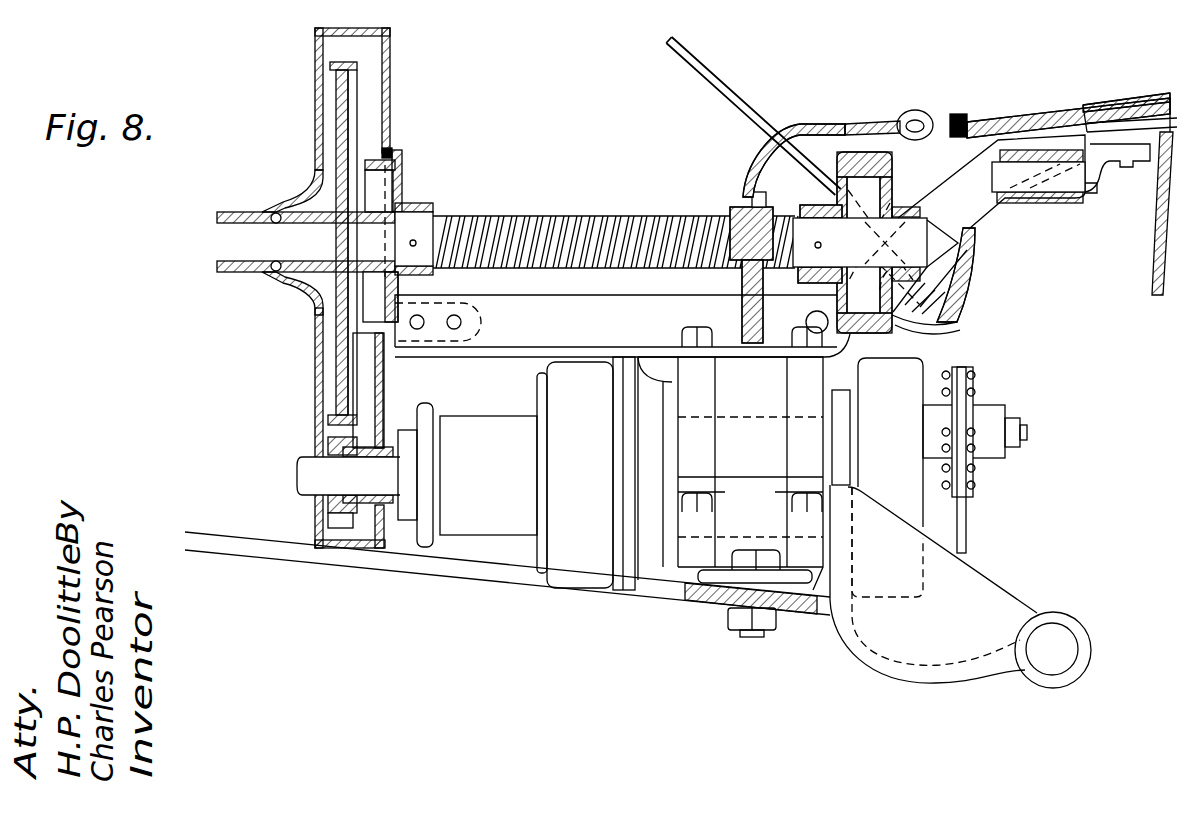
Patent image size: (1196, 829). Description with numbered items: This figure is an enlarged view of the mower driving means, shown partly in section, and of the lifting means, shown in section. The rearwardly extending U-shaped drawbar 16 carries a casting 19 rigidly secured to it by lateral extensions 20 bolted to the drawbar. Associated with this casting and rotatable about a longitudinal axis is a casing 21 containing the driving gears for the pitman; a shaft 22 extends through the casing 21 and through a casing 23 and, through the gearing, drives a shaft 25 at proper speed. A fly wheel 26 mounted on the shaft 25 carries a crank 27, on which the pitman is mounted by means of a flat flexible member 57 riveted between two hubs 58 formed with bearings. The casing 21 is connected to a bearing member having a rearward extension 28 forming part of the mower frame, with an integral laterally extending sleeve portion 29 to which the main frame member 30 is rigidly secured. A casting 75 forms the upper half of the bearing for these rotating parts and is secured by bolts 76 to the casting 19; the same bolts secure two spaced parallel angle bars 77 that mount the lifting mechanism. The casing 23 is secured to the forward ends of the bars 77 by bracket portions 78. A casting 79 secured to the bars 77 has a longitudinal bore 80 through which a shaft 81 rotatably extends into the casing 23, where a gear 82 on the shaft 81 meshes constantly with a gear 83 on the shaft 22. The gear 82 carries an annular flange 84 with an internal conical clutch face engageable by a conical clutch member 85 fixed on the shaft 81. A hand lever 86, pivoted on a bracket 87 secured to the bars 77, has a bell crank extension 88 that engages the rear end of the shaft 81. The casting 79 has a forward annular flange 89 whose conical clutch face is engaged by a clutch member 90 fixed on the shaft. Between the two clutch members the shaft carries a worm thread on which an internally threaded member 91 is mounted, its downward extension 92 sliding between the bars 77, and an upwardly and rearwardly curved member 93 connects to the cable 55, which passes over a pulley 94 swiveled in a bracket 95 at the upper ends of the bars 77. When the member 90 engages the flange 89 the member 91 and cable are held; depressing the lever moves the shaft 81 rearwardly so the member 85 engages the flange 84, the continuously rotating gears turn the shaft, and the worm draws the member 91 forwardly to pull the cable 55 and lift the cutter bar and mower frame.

The drawbar 16 is at (467, 573).
The casting 19 is at (666, 560).
The lateral extensions 20 is at (740, 590).
The casing 21 is at (578, 575).
The shaft 22 is at (300, 485).
The casing 23 is at (340, 550).
The shaft 25 is at (853, 468).
The fly wheel 26 is at (905, 370).
The crank 27 is at (1022, 415).
The rearward extension 28 is at (900, 668).
The sleeve portion 29 is at (1066, 620).
The main frame member 30 is at (1078, 649).
The cable 55 is at (1055, 122).
The flat flexible member 57 is at (962, 512).
The hubs 58 is at (975, 410).
The casting 75 is at (690, 365).
The bolts 76 is at (702, 327).
The angle bars 77 is at (518, 340).
The bracket portions 78 is at (441, 340).
The casting 79 is at (893, 170).
The bore 80 is at (920, 215).
The shaft 81 is at (435, 222).
The gear 82 is at (353, 93).
The gear 83 is at (345, 525).
The annular flange 84 is at (392, 148).
The conical clutch member 85 is at (402, 172).
The hand lever 86 is at (705, 78).
The bracket 87 is at (968, 314).
The bell crank extension 88 is at (966, 245).
The annular flange 89 is at (860, 152).
The clutch member 90 is at (836, 175).
The internally threaded member 91 is at (752, 205).
The downward extension 92 is at (742, 300).
The curved member 93 is at (768, 160).
The pulley 94 is at (1120, 106).
The bracket 95 is at (1045, 200).